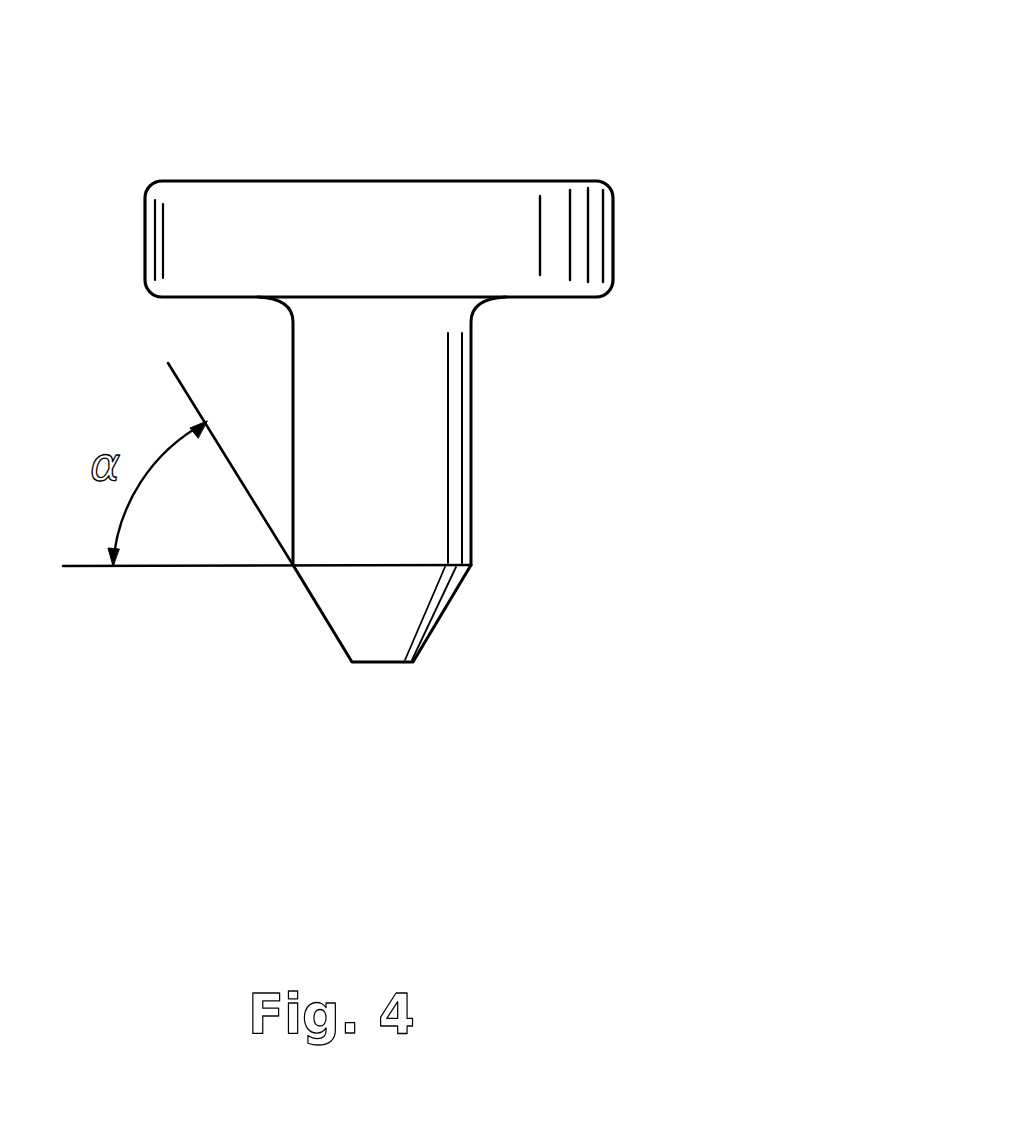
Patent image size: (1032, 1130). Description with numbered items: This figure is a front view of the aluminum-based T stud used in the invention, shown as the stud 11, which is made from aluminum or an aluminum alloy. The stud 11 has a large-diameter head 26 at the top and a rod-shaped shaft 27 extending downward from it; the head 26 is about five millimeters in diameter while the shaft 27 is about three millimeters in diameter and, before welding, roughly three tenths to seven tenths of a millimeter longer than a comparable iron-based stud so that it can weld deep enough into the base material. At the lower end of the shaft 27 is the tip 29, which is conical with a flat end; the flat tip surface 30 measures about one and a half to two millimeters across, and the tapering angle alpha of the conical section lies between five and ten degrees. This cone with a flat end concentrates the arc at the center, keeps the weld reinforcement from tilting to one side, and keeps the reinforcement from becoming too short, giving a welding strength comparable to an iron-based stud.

The stud 11 is at (473, 414).
The head 26 is at (353, 182).
The shaft 27 is at (472, 458).
The tip 29 is at (448, 602).
The tip surface 30 is at (380, 663).